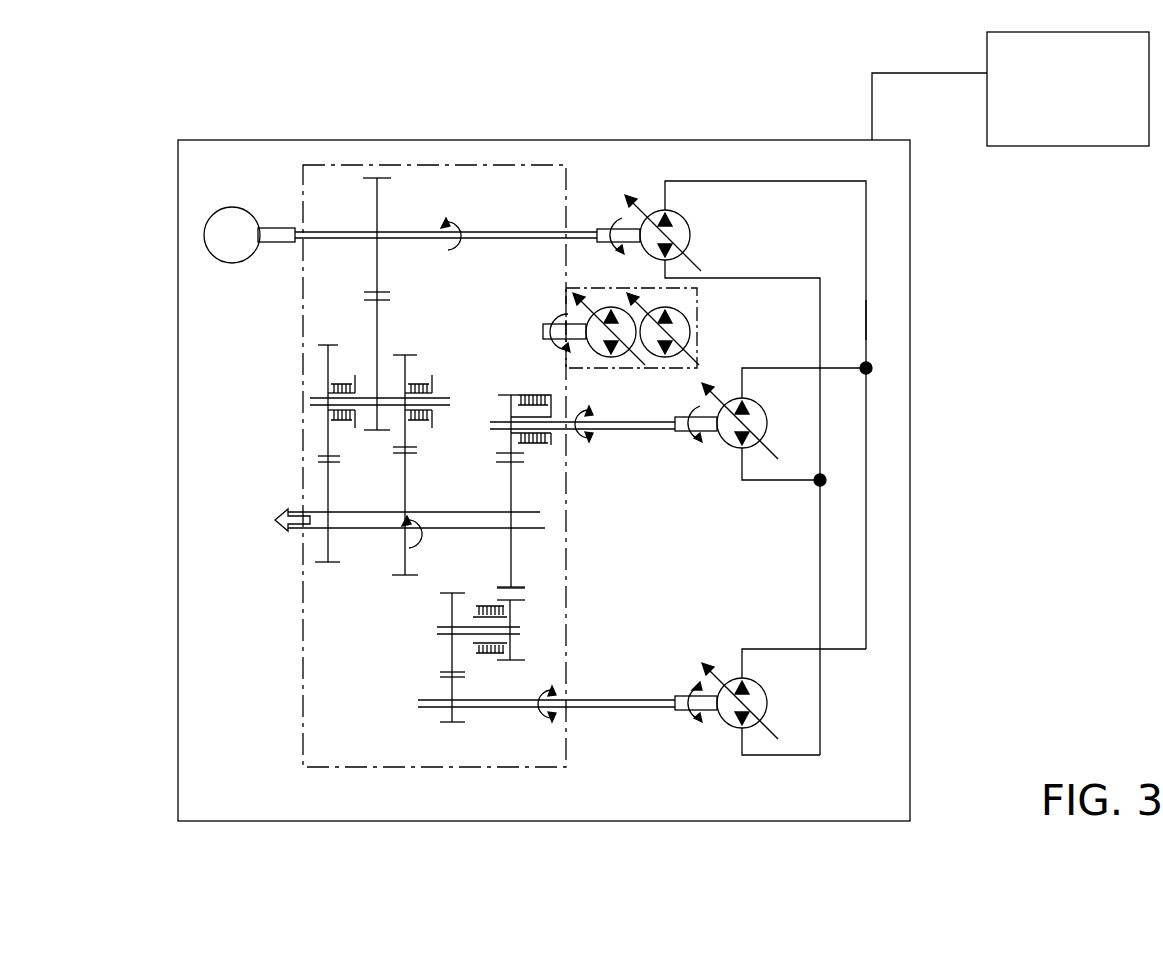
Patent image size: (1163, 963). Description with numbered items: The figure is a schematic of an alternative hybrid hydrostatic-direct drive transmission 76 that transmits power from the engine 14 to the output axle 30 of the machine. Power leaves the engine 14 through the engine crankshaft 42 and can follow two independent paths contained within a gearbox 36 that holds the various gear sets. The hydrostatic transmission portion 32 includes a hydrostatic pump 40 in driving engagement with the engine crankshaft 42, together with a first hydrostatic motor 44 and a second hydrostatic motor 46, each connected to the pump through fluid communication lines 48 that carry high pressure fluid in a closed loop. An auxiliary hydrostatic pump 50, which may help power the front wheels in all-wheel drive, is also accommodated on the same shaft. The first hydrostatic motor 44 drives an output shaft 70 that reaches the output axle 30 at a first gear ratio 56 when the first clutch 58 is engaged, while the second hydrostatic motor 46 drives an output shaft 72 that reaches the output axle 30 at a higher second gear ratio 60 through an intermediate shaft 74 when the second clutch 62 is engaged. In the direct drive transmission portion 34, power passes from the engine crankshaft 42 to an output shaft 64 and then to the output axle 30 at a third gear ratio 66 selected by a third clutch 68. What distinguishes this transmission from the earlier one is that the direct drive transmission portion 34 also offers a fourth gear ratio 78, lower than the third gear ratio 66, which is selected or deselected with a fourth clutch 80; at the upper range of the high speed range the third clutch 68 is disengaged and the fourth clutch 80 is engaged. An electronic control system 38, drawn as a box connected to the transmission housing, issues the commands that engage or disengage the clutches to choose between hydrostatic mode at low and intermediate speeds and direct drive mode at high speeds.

The engine 14 is at (232, 207).
The output axle 30 is at (290, 510).
The hydrostatic transmission portion 32 is at (896, 210).
The direct drive transmission portion 34 is at (355, 206).
The gearbox 36 is at (568, 181).
The electronic control system 38 is at (1070, 146).
The hydrostatic pump 40 is at (692, 232).
The engine crankshaft 42 is at (272, 242).
The first hydrostatic motor 44 is at (768, 408).
The second hydrostatic motor 46 is at (770, 688).
The fluid communication lines 48 is at (742, 278).
The auxiliary hydrostatic pump 50 is at (700, 316).
The first gear ratio 56 is at (482, 457).
The first clutch 58 is at (532, 394).
The second gear ratio 60 is at (532, 630).
The second clutch 62 is at (488, 606).
The output shaft 64 is at (410, 232).
The third gear ratio 66 is at (434, 450).
The third clutch 68 is at (420, 382).
The output shaft 70 is at (630, 429).
The output shaft 72 is at (627, 697).
The intermediate shaft 74 is at (437, 630).
The hybrid hydrostatic-direct drive transmission 76 is at (545, 140).
The fourth gear ratio 78 is at (298, 458).
The fourth clutch 80 is at (343, 425).